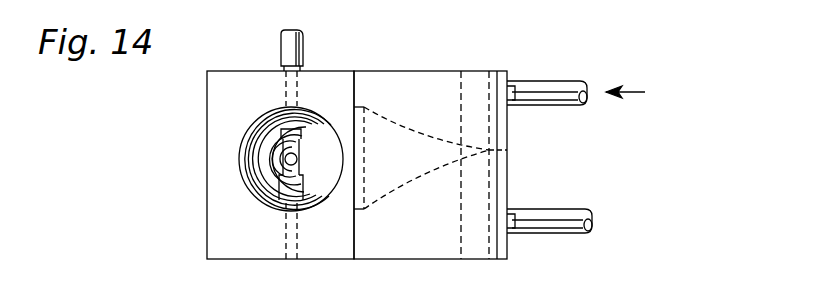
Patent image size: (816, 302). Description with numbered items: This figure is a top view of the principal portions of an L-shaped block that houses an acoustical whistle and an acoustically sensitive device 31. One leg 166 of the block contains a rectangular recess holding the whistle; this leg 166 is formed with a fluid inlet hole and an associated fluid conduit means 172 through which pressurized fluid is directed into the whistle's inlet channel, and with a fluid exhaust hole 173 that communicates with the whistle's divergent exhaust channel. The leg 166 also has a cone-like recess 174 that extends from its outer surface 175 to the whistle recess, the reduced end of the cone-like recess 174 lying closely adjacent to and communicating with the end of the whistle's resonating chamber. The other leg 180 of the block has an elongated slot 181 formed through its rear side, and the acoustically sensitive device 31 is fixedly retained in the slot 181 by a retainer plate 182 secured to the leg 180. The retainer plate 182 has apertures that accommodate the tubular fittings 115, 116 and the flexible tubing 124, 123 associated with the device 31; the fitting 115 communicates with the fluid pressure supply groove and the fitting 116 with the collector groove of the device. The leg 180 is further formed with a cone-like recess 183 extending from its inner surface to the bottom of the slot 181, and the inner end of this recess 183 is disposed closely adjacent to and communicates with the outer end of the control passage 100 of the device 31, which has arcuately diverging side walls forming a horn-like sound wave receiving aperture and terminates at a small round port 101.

The block leg 166 is at (212, 92).
The block leg 180 is at (383, 72).
The elongated slot 181 is at (462, 103).
The cone-like recess 183 is at (412, 187).
The fluid conduit means 172 is at (293, 43).
The cone-like recess 174 is at (256, 178).
The outer surface 175 is at (322, 246).
The fluid exhaust hole 173 is at (288, 238).
The acoustically sensitive device 31 is at (285, 150).
The flexible tubing 123 is at (556, 86).
The tubular fitting 115 is at (528, 80).
The control passage 100 is at (509, 128).
The small round port 101 is at (509, 150).
The retainer plate 182 is at (507, 185).
The flexible tubing 124 is at (572, 213).
The tubular fitting 116 is at (528, 238).